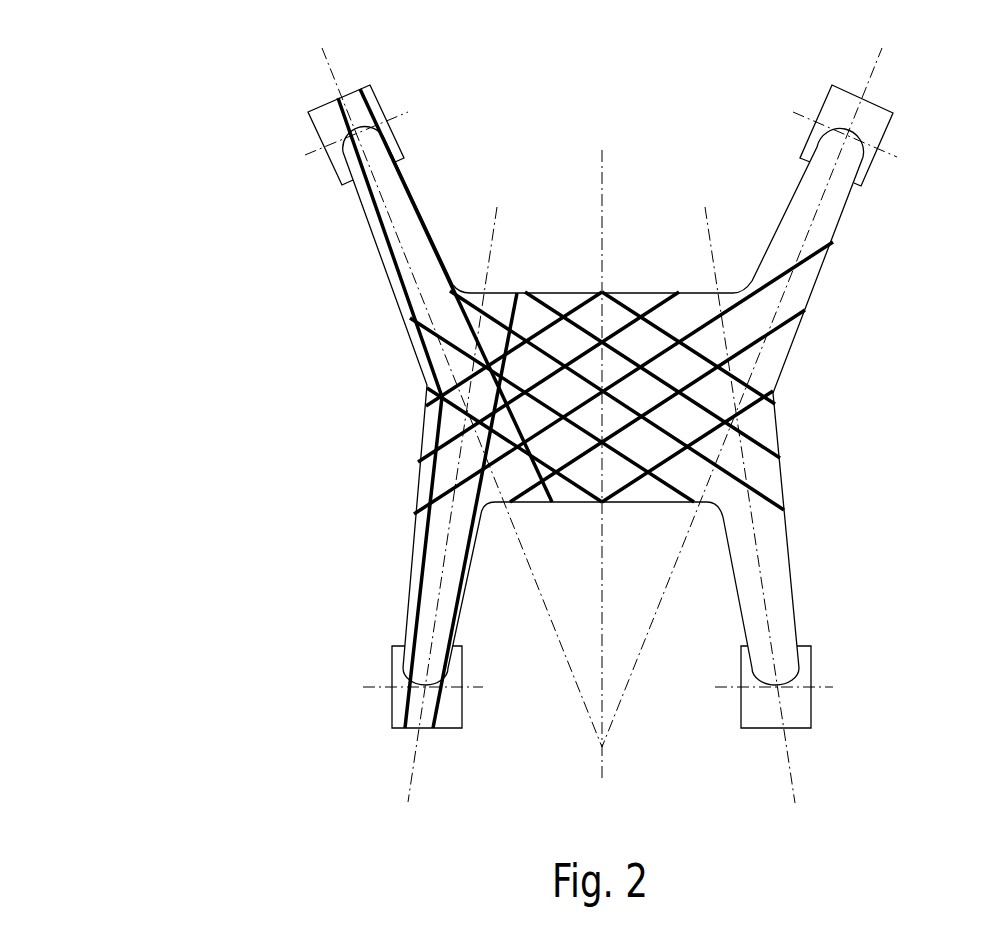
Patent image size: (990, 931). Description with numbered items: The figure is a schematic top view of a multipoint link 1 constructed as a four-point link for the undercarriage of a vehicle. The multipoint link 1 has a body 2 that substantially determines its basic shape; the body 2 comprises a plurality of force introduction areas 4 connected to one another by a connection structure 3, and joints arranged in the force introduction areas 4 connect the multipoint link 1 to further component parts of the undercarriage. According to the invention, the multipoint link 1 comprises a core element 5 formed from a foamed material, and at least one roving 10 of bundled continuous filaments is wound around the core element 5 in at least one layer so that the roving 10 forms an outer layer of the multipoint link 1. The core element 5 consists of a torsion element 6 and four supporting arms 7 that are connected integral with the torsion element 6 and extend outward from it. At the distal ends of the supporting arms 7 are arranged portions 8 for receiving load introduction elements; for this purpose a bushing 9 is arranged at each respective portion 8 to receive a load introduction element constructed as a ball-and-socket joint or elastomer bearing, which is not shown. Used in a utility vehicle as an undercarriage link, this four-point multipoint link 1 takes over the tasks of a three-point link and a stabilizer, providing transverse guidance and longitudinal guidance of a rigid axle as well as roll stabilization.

The multipoint link 1 is at (188, 447).
The body 2 is at (417, 411).
The connection structure 3 is at (623, 293).
The force introduction areas 4 is at (310, 110).
The core element 5 is at (765, 373).
The torsion element 6 is at (657, 293).
The supporting arms 7 is at (386, 243).
The portions for receiving load introduction elements 8 is at (350, 200).
The bushing 9 is at (370, 107).
The roving 10 is at (547, 293).